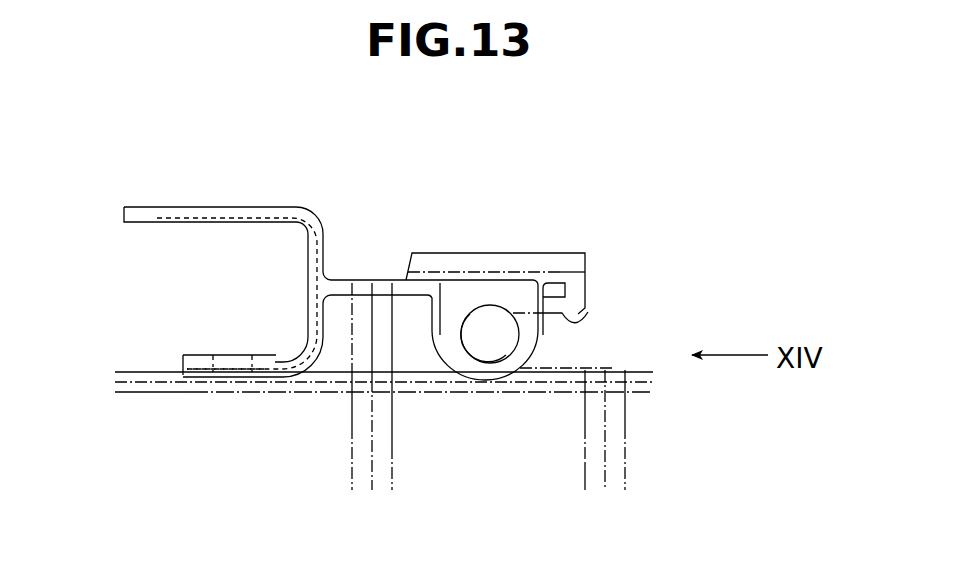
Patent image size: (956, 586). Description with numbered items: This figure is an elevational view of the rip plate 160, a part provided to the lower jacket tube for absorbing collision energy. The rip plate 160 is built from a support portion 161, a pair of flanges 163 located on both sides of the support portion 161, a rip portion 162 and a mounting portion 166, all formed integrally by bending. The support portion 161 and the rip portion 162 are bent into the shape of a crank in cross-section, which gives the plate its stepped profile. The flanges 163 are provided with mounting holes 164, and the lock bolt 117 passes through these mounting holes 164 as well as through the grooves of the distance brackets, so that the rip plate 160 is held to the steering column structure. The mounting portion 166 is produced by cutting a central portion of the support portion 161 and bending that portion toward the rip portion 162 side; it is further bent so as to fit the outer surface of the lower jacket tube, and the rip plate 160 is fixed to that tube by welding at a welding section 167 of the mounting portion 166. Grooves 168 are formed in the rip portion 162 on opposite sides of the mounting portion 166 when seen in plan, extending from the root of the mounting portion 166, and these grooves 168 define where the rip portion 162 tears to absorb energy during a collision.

The rip plate 160 is at (145, 206).
The rip portion 162 is at (276, 207).
The grooves 168 is at (205, 222).
The mounting portion 166 is at (200, 354).
The welding section 167 is at (225, 364).
The flanges 163 is at (452, 307).
The mounting holes 164 is at (488, 318).
The lock bolt 117 is at (495, 347).
The support portion 161 is at (557, 280).